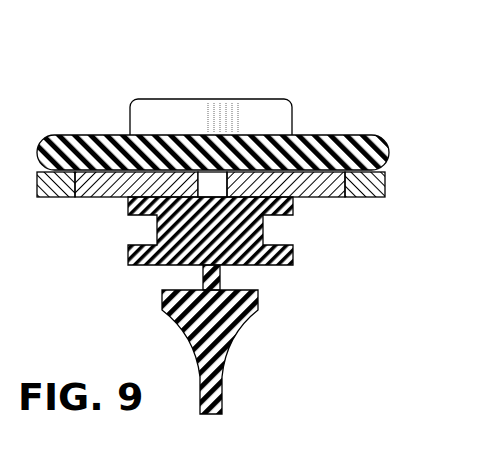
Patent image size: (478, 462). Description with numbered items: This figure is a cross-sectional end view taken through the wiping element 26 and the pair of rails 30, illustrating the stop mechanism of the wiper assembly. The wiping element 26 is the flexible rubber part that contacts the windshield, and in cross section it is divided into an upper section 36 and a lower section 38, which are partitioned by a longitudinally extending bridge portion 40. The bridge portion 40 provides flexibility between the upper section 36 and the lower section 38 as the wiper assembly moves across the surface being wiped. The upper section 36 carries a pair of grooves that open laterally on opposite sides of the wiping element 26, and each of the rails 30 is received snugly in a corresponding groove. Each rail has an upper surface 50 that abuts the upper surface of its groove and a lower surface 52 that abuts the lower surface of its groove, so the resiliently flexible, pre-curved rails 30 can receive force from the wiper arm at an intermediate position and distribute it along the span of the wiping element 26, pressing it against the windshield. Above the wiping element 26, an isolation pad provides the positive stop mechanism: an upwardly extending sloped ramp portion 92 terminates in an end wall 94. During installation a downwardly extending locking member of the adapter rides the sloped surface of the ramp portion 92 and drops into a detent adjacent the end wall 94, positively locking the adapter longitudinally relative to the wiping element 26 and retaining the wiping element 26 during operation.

The wiping element 26 is at (252, 349).
The rails 30 is at (220, 176).
The upper section 36 is at (293, 210).
The lower section 38 is at (246, 357).
The bridge portion 40 is at (218, 278).
The upper surface 50 is at (88, 135).
The lower surface 52 is at (98, 197).
The ramp portion 92 is at (184, 98).
The end wall 94 is at (253, 112).